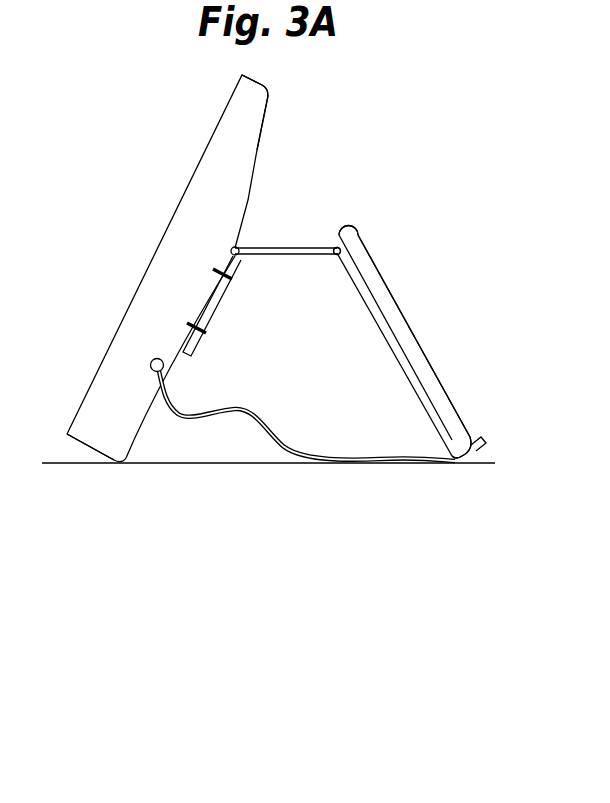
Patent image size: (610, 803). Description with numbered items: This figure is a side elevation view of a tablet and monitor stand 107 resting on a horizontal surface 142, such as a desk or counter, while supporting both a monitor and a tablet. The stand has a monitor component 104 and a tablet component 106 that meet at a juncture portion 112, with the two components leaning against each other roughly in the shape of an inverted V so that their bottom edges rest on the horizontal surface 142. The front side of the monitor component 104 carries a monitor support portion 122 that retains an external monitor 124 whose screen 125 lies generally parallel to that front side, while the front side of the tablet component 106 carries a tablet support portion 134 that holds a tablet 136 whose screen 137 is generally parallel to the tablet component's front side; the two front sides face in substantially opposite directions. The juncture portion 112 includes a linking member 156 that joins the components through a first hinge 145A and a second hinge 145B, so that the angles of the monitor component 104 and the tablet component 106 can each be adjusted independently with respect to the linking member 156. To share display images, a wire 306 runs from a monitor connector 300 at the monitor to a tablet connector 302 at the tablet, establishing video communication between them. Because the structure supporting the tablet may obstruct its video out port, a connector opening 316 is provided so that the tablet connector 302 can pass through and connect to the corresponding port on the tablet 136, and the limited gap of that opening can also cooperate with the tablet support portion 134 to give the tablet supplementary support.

The monitor component 104 is at (170, 450).
The tablet component 106 is at (404, 484).
The tablet and monitor stand 107 is at (369, 85).
The juncture portion 112 is at (280, 189).
The monitor support portion 122 is at (236, 305).
The external monitor 124 is at (232, 93).
The screen 125 is at (187, 183).
The tablet support portion 134 is at (360, 333).
The tablet 136 is at (347, 228).
The screen 137 is at (400, 315).
The horizontal surface 142 is at (487, 456).
The first hinge 145A is at (233, 238).
The second hinge 145B is at (341, 252).
The linking member 156 is at (300, 247).
The monitor connector 300 is at (150, 363).
The tablet connector 302 is at (460, 437).
The wire 306 is at (287, 450).
The connector opening 316 is at (479, 470).